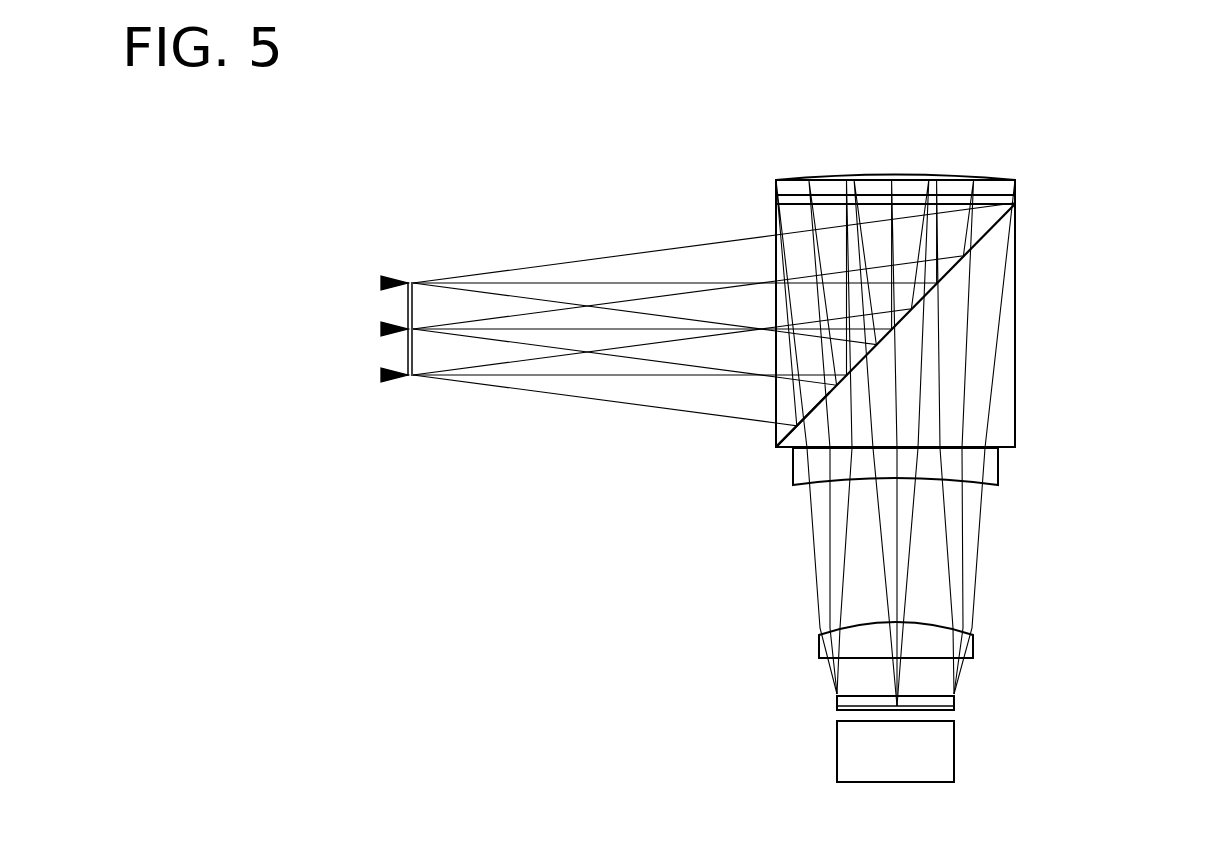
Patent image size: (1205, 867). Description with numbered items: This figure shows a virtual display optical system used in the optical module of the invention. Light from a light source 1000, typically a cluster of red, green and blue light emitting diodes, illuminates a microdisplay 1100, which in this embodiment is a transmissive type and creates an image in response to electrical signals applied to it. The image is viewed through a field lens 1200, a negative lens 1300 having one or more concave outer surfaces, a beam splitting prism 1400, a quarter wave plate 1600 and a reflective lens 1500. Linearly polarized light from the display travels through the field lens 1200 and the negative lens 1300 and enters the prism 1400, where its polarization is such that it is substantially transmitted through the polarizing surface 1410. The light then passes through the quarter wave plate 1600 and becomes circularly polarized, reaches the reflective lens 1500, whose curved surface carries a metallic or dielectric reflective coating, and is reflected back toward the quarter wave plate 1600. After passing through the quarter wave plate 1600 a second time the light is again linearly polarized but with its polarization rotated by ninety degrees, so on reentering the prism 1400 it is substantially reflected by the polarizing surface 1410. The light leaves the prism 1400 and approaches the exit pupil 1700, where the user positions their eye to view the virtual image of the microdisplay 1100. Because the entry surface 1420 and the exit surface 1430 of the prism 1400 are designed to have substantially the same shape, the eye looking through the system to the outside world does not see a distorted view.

The light source 1000 is at (955, 764).
The microdisplay 1100 is at (955, 708).
The field lens 1200 is at (974, 645).
The negative lens 1300 is at (1000, 460).
The beam splitting prism 1400 is at (1016, 317).
The polarizing surface 1410 is at (1026, 231).
The entry surface 1420 is at (760, 437).
The exit surface 1430 is at (1043, 411).
The reflective lens 1500 is at (912, 178).
The quarter wave plate 1600 is at (776, 206).
The exit pupil 1700 is at (407, 306).